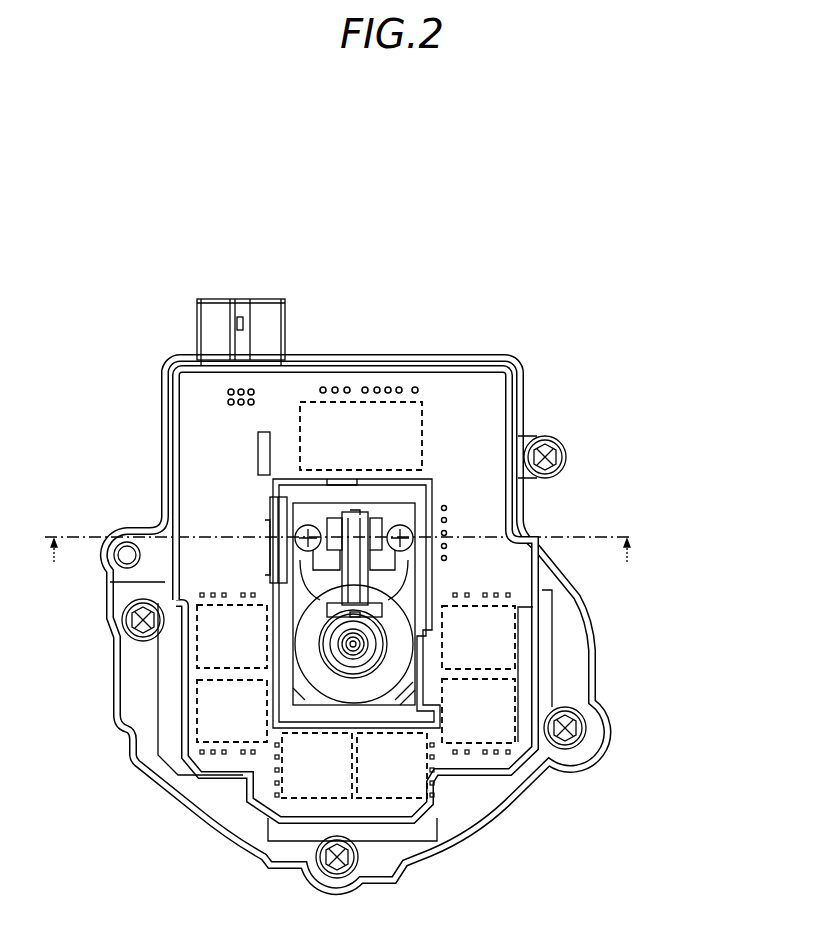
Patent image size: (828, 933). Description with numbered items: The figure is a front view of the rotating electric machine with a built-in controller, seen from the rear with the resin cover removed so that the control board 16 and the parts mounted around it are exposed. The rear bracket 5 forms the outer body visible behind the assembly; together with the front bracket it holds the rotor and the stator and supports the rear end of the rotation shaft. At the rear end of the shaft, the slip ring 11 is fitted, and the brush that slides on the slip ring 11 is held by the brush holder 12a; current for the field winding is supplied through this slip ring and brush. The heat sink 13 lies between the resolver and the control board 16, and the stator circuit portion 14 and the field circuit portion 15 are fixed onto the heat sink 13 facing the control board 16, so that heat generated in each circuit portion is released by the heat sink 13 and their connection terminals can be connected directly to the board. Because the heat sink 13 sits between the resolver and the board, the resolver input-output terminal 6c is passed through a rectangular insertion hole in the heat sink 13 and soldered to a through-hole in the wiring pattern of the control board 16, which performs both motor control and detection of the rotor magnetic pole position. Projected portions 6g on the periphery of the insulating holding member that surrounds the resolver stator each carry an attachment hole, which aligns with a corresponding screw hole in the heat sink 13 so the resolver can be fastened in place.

The rear bracket 5 is at (492, 813).
The resolver input-output terminal 6c is at (448, 518).
The projected portion 6g is at (265, 525).
The slip ring 11 is at (280, 755).
The brush holder 12a is at (357, 528).
The heat sink 13 is at (543, 622).
The stator circuit portion 14 is at (218, 712).
The field circuit portion 15 is at (365, 418).
The control board 16 is at (457, 423).